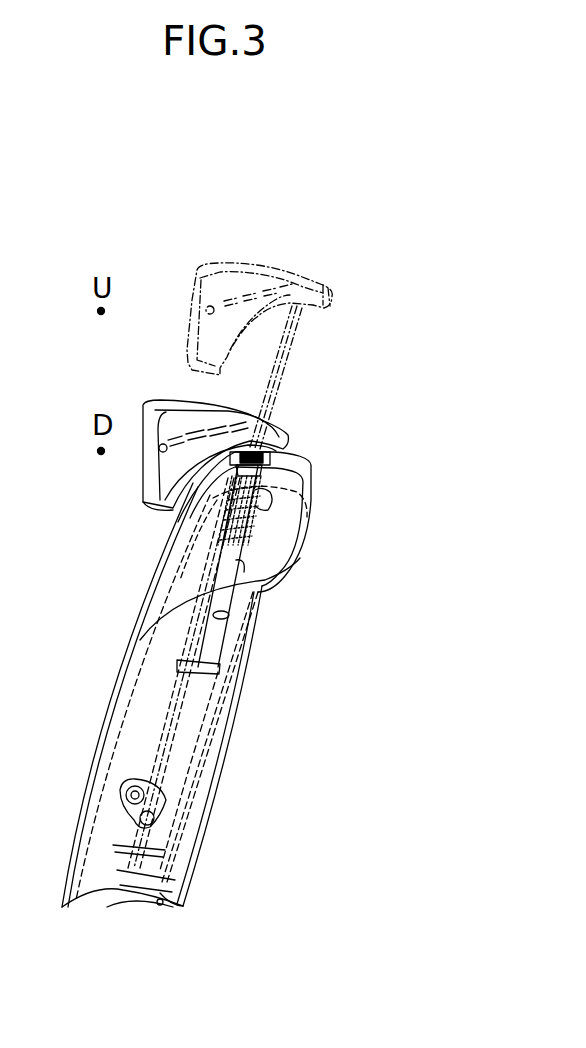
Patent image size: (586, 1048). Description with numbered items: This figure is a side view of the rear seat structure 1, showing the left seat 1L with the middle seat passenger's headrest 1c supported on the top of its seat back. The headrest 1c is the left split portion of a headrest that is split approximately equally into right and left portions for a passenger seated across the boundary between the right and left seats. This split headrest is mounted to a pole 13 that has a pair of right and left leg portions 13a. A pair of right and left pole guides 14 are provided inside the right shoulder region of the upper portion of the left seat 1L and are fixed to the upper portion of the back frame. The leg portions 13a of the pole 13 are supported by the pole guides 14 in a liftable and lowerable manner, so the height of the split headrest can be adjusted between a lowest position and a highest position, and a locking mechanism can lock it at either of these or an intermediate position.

The rear seat structure 1 is at (317, 467).
The left seat 1L is at (217, 752).
The middle seat passenger's headrest 1c is at (277, 265).
The pole 13 is at (287, 364).
The leg portions 13a is at (197, 602).
The pole guides 14 is at (270, 505).